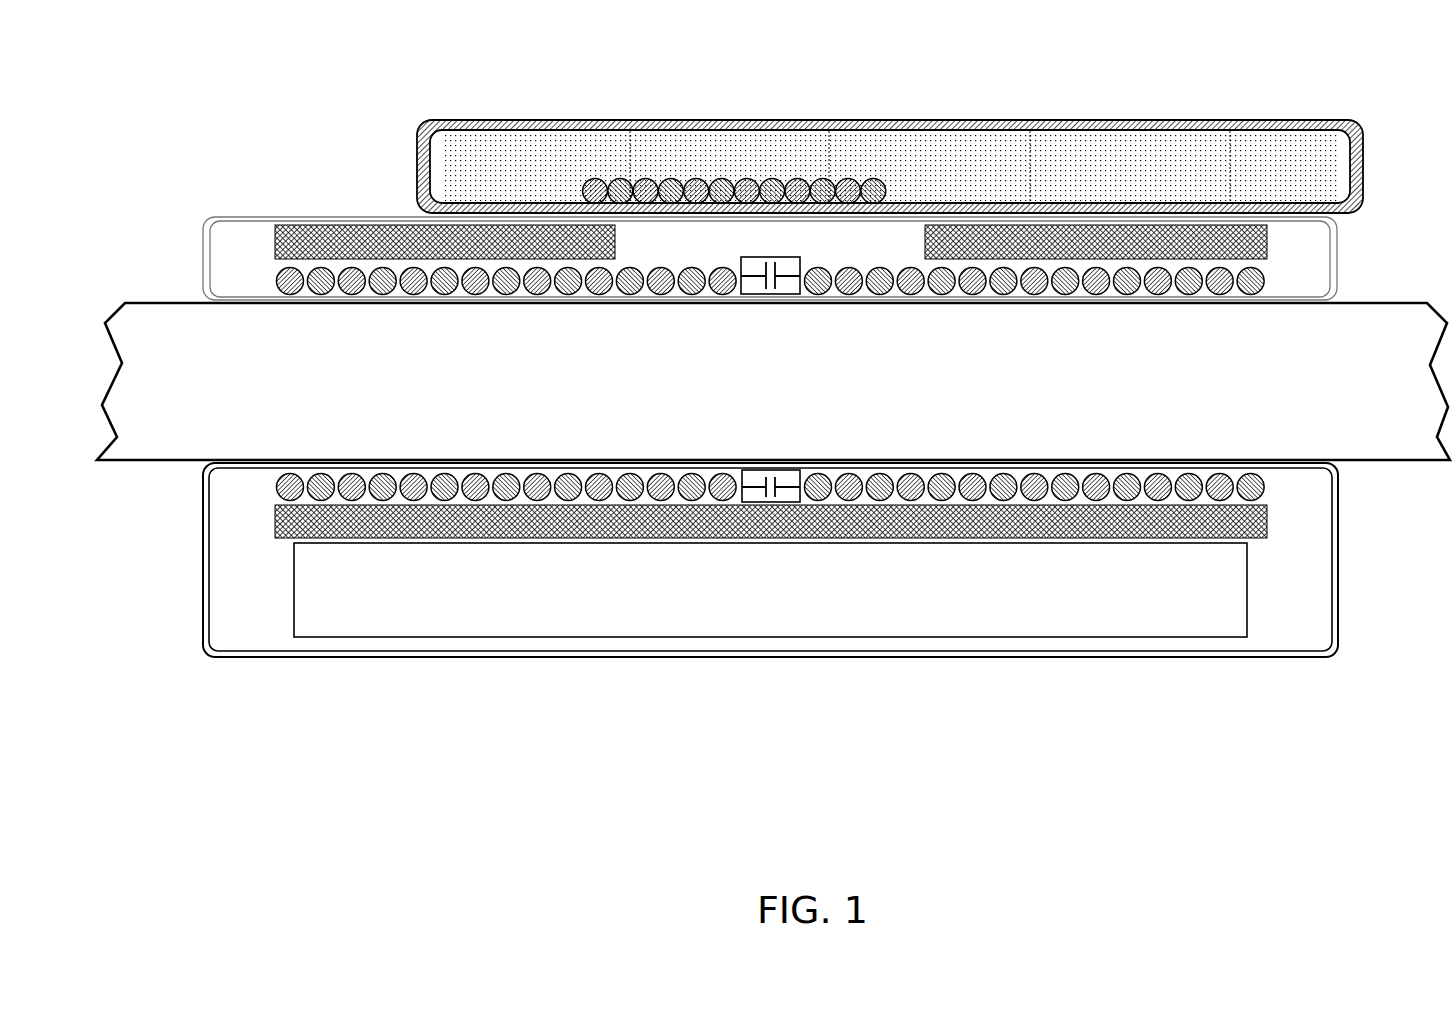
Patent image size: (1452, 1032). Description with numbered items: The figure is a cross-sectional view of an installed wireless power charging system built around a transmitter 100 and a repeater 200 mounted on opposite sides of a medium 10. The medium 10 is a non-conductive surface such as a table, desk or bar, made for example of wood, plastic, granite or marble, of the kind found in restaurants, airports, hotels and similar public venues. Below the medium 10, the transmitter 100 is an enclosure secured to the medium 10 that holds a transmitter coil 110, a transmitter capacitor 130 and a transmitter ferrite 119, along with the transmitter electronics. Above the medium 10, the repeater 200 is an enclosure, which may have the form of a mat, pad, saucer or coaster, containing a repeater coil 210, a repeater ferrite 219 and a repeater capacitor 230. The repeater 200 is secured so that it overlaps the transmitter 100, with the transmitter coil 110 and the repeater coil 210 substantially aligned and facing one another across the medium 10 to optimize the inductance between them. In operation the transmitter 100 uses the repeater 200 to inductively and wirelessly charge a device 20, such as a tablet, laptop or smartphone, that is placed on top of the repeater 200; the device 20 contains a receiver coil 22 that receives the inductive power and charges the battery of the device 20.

The medium 10 is at (122, 462).
The device 20 is at (650, 120).
The receiver coil 22 is at (810, 185).
The transmitter 100 is at (200, 660).
The transmitter coil 110 is at (646, 472).
The transmitter ferrite 119 is at (1267, 528).
The transmitter capacitor 130 is at (790, 482).
The repeater 200 is at (200, 214).
The repeater coil 210 is at (466, 296).
The repeater ferrite 219 is at (381, 225).
The repeater capacitor 230 is at (752, 295).